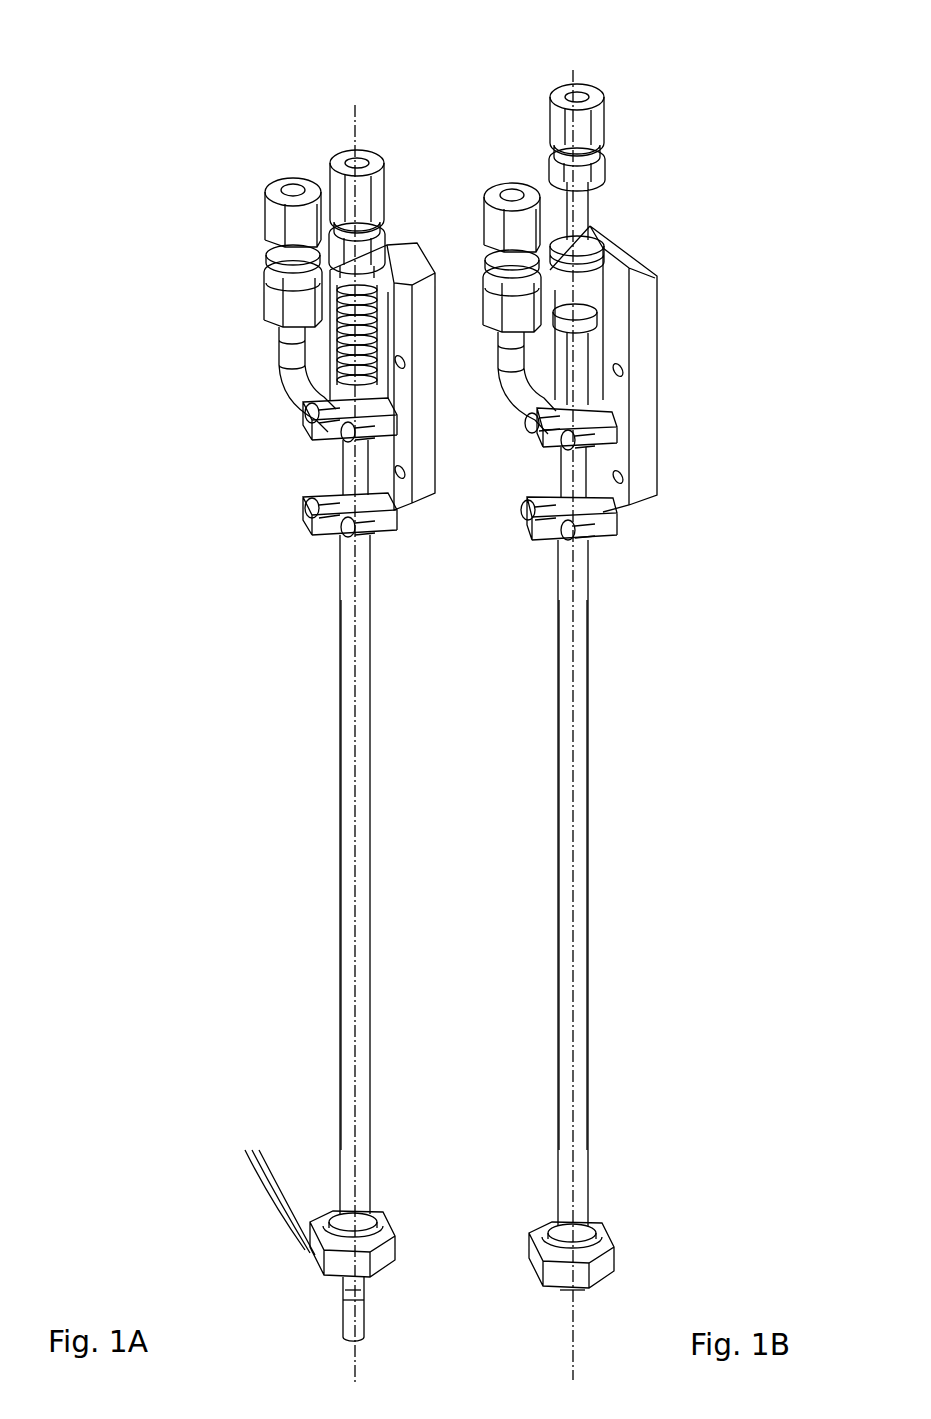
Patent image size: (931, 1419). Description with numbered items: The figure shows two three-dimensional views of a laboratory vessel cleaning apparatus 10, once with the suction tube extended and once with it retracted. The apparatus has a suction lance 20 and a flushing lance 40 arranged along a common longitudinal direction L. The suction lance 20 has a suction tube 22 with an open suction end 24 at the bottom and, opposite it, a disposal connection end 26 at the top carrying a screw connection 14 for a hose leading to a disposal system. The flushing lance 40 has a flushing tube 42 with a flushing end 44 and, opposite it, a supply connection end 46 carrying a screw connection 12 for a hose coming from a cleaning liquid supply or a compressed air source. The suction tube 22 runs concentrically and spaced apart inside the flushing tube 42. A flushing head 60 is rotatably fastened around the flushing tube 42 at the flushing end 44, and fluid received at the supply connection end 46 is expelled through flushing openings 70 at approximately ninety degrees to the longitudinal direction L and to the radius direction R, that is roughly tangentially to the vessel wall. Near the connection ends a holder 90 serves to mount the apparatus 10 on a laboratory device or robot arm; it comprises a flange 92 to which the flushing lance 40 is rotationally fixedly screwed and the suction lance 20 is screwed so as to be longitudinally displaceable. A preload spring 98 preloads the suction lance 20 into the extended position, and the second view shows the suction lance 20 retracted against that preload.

In FIG. 1A, the laboratory vessel cleaning apparatus 10 is at (188, 190).
In FIG. 1B, the laboratory vessel cleaning apparatus 10 is at (736, 228).
In FIG. 1A, the screw connection 12 is at (262, 262).
In FIG. 1B, the screw connection 12 is at (488, 245).
In FIG. 1A, the screw connection 14 is at (385, 218).
In FIG. 1B, the screw connection 14 is at (600, 172).
In FIG. 1A, the suction lance 20 is at (315, 1305).
In FIG. 1B, the suction lance 20 is at (610, 458).
In FIG. 1A, the suction tube 22 is at (340, 1297).
In FIG. 1A, the suction end 24 is at (378, 1298).
In FIG. 1B, the suction end 24 is at (532, 1297).
In FIG. 1A, the disposal connection end 26 is at (388, 135).
In FIG. 1B, the disposal connection end 26 is at (625, 125).
In FIG. 1A, the flushing lance 40 is at (385, 925).
In FIG. 1B, the flushing lance 40 is at (532, 915).
In FIG. 1A, the flushing tube 42 is at (375, 695).
In FIG. 1B, the flushing tube 42 is at (553, 695).
In FIG. 1A, the flushing end 44 is at (393, 1199).
In FIG. 1B, the flushing end 44 is at (571, 1215).
In FIG. 1A, the supply connection end 46 is at (300, 160).
In FIG. 1B, the supply connection end 46 is at (478, 168).
In FIG. 1A, the flushing head 60 is at (395, 1265).
In FIG. 1B, the flushing head 60 is at (530, 1265).
In FIG. 1A, the flushing openings 70 is at (275, 1185).
In FIG. 1A, the holder 90 is at (396, 410).
In FIG. 1B, the holder 90 is at (567, 387).
In FIG. 1A, the flange 92 is at (427, 452).
In FIG. 1B, the flange 92 is at (569, 369).
In FIG. 1A, the preload spring 98 is at (320, 380).
In FIG. 1A, the longitudinal direction L is at (352, 118).
In FIG. 1B, the longitudinal direction L is at (577, 80).
In FIG. 1A, the radius direction R is at (400, 1242).
In FIG. 1B, the radius direction R is at (610, 1215).